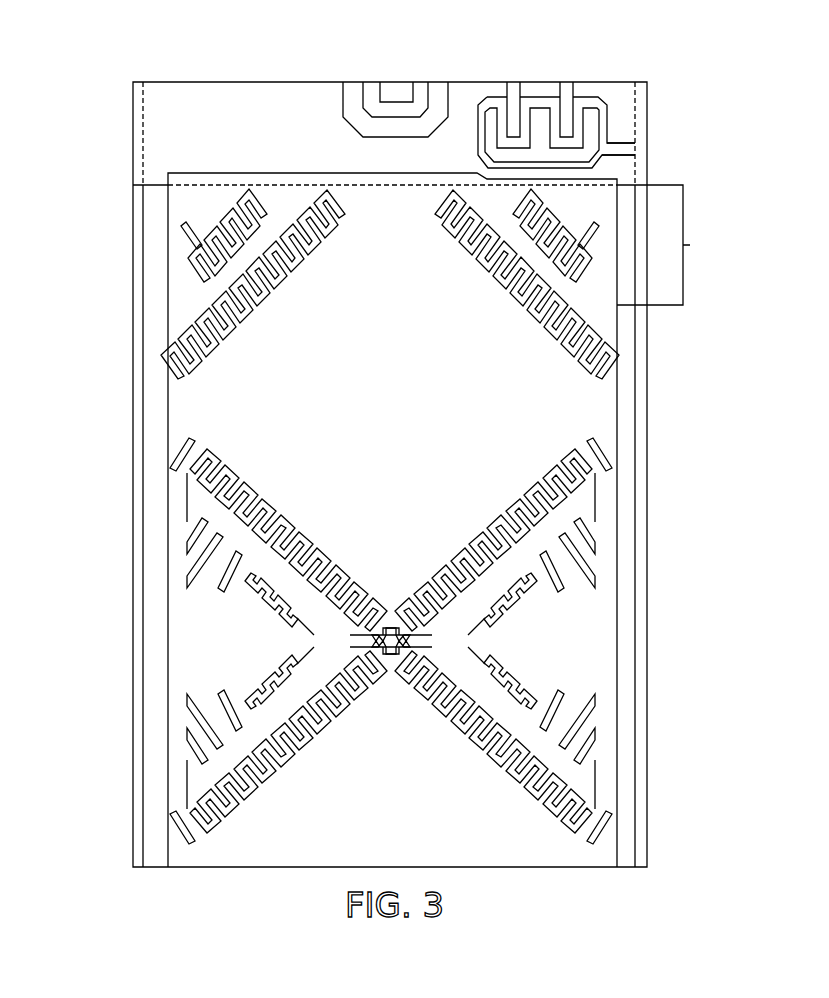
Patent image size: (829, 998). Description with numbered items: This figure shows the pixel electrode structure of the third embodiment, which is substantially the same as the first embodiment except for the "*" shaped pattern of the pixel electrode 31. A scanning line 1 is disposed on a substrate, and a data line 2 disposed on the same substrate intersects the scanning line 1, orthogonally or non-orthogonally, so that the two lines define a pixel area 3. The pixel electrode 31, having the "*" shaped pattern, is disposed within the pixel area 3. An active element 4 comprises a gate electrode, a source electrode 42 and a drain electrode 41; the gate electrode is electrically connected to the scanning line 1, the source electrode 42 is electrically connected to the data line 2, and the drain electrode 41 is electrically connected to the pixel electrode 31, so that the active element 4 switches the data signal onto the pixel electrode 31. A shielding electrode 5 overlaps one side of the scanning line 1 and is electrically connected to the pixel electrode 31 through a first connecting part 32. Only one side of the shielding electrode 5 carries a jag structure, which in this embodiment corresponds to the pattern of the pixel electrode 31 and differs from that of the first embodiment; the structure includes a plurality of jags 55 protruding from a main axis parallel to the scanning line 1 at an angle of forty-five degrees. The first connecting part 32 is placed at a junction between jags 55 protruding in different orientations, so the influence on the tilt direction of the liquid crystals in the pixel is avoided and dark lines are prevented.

The scanning line 1 is at (256, 104).
The data line 2 is at (133, 332).
The pixel area 3 is at (168, 678).
The pixel electrode 31 is at (190, 405).
The first connecting part 32 is at (381, 225).
The active element 4 is at (603, 100).
The drain electrode 41 is at (566, 82).
The source electrode 42 is at (637, 150).
The shielding electrode 5 is at (662, 245).
The jags 55 is at (586, 288).